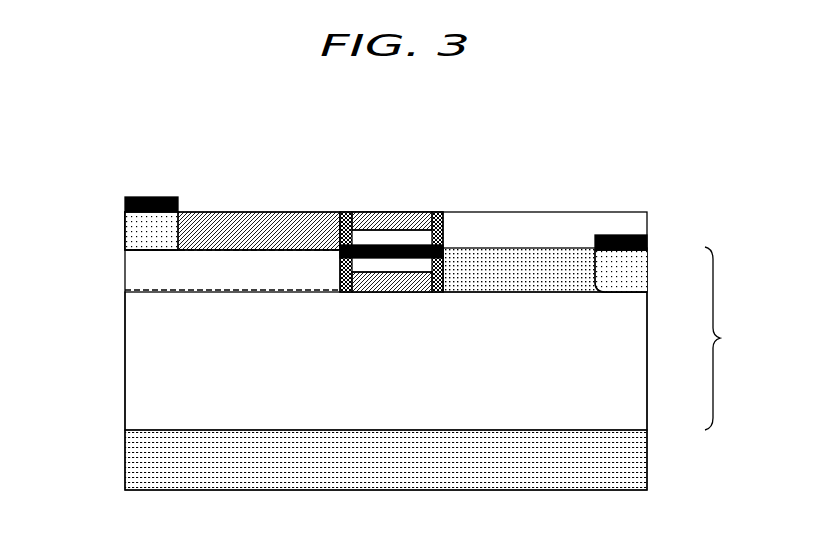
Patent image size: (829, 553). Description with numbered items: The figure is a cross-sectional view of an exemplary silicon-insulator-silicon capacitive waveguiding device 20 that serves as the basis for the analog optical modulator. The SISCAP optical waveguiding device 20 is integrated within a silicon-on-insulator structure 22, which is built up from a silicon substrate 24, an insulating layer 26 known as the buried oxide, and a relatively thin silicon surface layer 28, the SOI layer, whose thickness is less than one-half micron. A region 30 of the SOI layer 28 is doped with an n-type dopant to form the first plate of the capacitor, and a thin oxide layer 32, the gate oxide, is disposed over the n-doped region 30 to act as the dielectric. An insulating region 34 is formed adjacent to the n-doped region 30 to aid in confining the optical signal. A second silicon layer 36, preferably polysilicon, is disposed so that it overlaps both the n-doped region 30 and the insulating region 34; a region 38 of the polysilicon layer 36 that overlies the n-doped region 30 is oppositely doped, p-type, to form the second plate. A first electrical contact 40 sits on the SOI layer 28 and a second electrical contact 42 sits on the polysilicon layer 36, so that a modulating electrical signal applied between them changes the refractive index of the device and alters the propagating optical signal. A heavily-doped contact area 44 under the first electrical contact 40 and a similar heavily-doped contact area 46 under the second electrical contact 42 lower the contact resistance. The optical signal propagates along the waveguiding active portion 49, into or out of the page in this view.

The SISCAP optical waveguiding device 20 is at (555, 136).
The silicon-on-insulator structure 22 is at (755, 353).
The silicon substrate 24 is at (371, 467).
The insulating layer 26 is at (622, 362).
The silicon surface layer 28 is at (510, 278).
The n-doped region 30 is at (447, 268).
The thin oxide layer 32 is at (362, 251).
The insulating region 34 is at (145, 277).
The second silicon layer 36 is at (322, 222).
The p-doped region 38 is at (402, 225).
The first electrical contact 40 is at (620, 235).
The second electrical contact 42 is at (152, 197).
The heavily-doped contact area 44 is at (672, 272).
The heavily-doped contact area 46 is at (95, 233).
The waveguiding active portion 49 is at (425, 297).